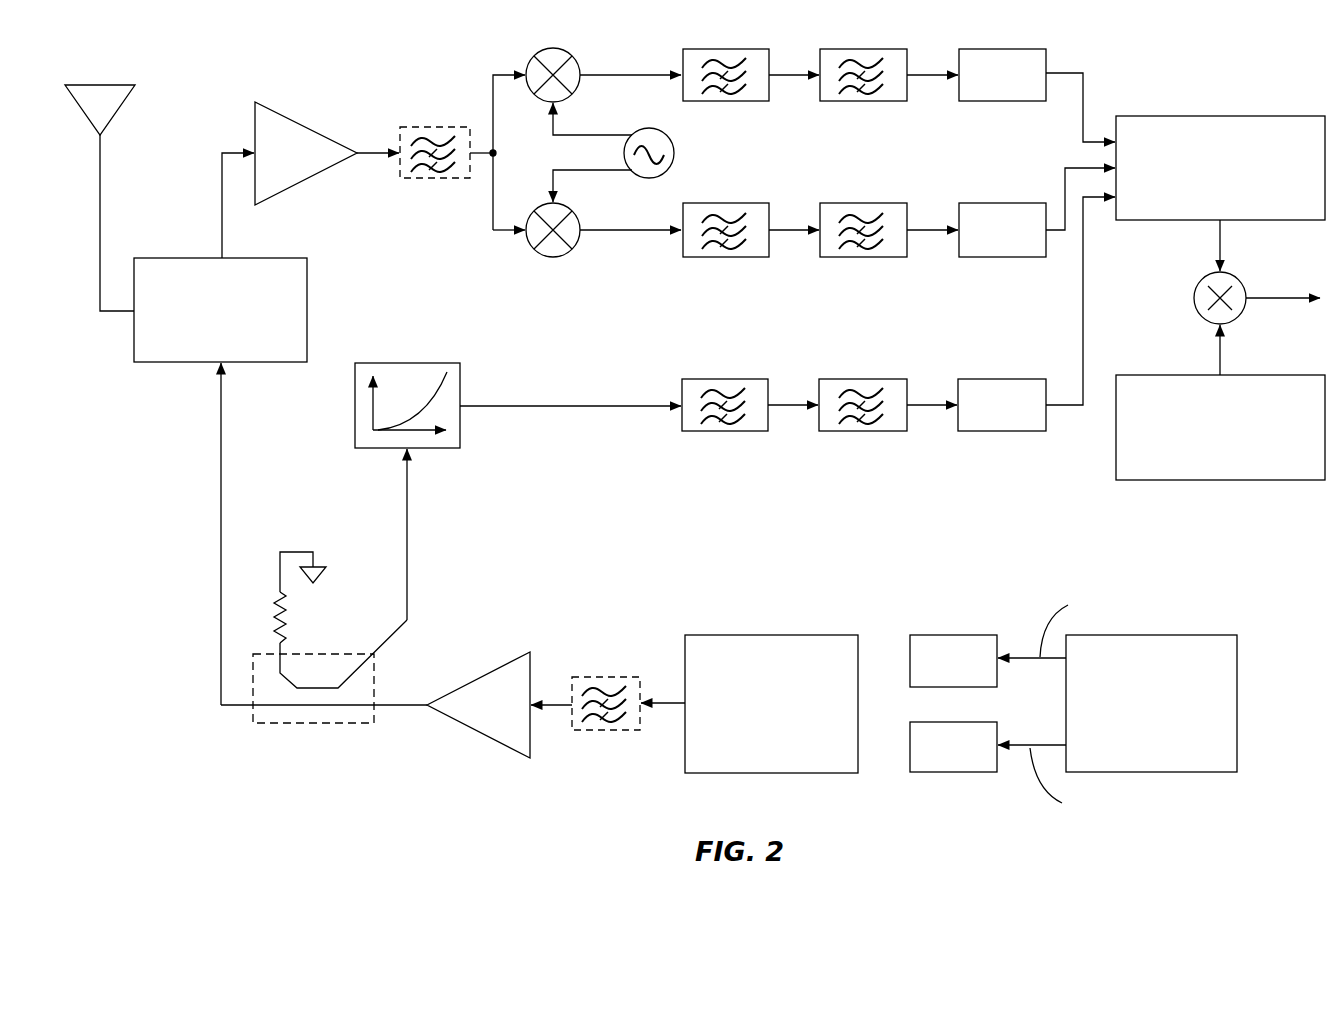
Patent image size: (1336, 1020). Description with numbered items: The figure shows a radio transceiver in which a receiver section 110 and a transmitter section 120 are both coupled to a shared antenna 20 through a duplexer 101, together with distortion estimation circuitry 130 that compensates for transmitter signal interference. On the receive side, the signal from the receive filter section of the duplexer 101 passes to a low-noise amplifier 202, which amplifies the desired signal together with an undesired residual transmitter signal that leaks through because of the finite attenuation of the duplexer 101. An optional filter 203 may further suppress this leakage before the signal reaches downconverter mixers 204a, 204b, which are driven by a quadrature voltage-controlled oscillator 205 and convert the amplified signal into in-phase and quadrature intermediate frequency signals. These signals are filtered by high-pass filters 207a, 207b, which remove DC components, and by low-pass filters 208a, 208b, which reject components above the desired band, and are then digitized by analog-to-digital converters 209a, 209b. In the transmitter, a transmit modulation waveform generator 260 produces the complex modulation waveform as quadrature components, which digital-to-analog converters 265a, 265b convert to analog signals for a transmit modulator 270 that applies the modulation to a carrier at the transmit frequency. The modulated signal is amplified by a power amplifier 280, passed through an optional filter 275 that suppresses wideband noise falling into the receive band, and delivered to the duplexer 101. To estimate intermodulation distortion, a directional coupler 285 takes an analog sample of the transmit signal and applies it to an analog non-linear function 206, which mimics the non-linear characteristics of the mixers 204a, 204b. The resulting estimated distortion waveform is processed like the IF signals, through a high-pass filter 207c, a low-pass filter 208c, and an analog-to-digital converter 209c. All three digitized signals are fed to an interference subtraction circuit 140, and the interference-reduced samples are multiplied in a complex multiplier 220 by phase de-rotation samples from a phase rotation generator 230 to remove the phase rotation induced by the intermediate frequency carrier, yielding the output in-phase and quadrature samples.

The antenna 20 is at (119, 110).
The duplexer 101 is at (220, 257).
The receiver section 110 is at (343, 66).
The transmitter section 120 is at (752, 608).
The distortion estimation circuitry 130 is at (800, 362).
The interference subtraction circuit 140 is at (1220, 193).
The low-noise amplifier 202 is at (297, 188).
The filter 203 is at (415, 180).
The mixer 204a is at (563, 52).
The mixer 204b is at (562, 254).
The quadrature voltage-controlled oscillator 205 is at (666, 170).
The analog non-linear function 206 is at (391, 362).
The high-pass filter 207a is at (734, 101).
The high-pass filter 207b is at (734, 257).
The high-pass filter 207c is at (733, 431).
The low-pass filter 208a is at (872, 101).
The low-pass filter 208b is at (872, 257).
The low-pass filter 208c is at (872, 431).
The analog-to-digital converter 209a is at (997, 101).
The analog-to-digital converter 209b is at (997, 257).
The analog-to-digital converter 209c is at (997, 431).
The complex multiplier 220 is at (1236, 277).
The phase rotation generator 230 is at (1220, 404).
The transmit modulation waveform generator 260 is at (1133, 707).
The digital-to-analog converter 265a is at (962, 635).
The digital-to-analog converter 265b is at (962, 772).
The transmit modulator 270 is at (771, 704).
The filter 275 is at (585, 730).
The power amplifier 280 is at (490, 735).
The directional coupler 285 is at (338, 724).